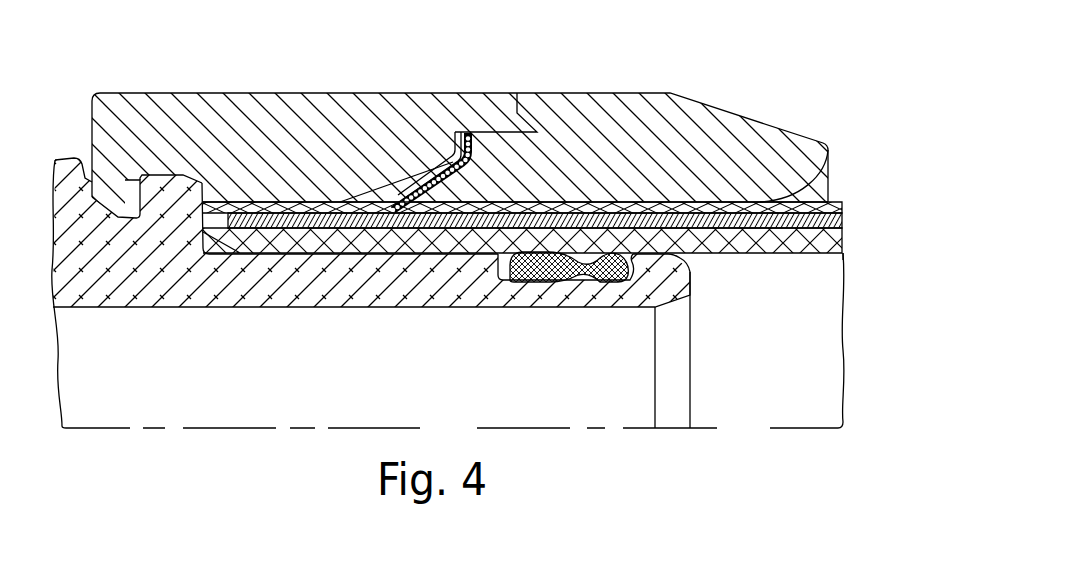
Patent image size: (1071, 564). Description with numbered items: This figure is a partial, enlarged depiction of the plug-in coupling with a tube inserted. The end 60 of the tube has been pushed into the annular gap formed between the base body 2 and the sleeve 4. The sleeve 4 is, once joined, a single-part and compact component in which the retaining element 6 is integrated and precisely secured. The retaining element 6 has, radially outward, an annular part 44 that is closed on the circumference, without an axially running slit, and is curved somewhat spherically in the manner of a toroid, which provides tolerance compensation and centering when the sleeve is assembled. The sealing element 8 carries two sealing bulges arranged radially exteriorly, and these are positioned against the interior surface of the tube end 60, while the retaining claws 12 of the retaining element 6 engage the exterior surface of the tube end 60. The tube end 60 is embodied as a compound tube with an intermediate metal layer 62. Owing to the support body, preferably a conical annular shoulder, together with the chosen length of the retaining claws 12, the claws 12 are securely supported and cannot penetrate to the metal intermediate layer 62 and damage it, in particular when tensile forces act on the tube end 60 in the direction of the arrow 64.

The base body 2 is at (72, 177).
The sleeve 4 is at (218, 93).
The retaining element 6 is at (447, 152).
The sealing element 8 is at (546, 282).
The retaining claws 12 is at (418, 178).
The annular part 44 is at (470, 132).
The tube end 60 is at (713, 255).
The intermediate metal layer 62 is at (777, 222).
The arrow 64 is at (812, 393).